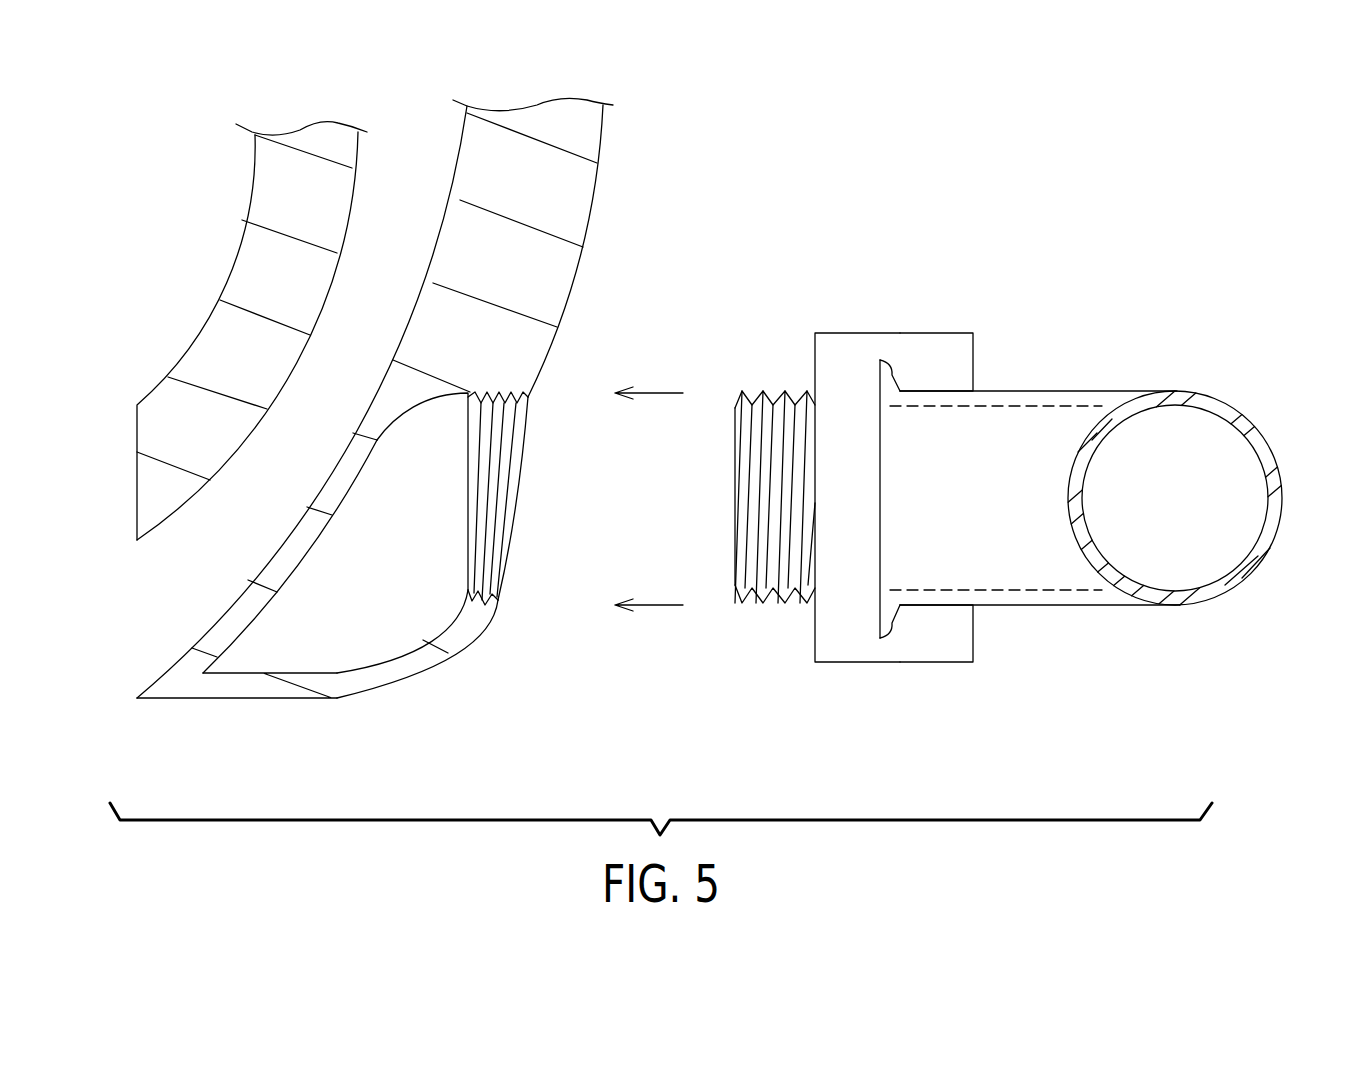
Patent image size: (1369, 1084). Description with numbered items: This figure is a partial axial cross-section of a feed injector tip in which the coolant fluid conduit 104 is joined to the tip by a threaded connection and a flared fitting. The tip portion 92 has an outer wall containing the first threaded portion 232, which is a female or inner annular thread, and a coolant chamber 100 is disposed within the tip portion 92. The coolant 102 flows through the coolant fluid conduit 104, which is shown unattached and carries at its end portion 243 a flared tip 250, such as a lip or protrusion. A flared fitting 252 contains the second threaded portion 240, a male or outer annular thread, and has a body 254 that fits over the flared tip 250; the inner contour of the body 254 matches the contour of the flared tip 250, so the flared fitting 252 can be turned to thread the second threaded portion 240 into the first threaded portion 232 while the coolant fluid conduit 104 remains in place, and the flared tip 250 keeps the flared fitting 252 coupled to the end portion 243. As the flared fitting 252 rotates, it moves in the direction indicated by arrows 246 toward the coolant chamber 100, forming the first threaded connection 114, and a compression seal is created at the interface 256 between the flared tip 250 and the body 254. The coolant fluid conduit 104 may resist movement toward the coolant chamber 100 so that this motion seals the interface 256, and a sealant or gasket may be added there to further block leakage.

The coolant chamber 100 is at (333, 620).
The tip portion 92 is at (393, 687).
The first threaded portion 232 is at (480, 590).
The flared tip 250 is at (498, 403).
The second threaded portion 240 is at (757, 598).
The flared fitting 252 is at (843, 352).
The body 254 is at (953, 352).
The interface 256 is at (892, 375).
The end portion 243 is at (1043, 607).
The coolant 102 is at (1213, 465).
The coolant fluid conduit 104 is at (1283, 497).
The first threaded connection 114 is at (881, 488).
The arrows 246 is at (653, 392).